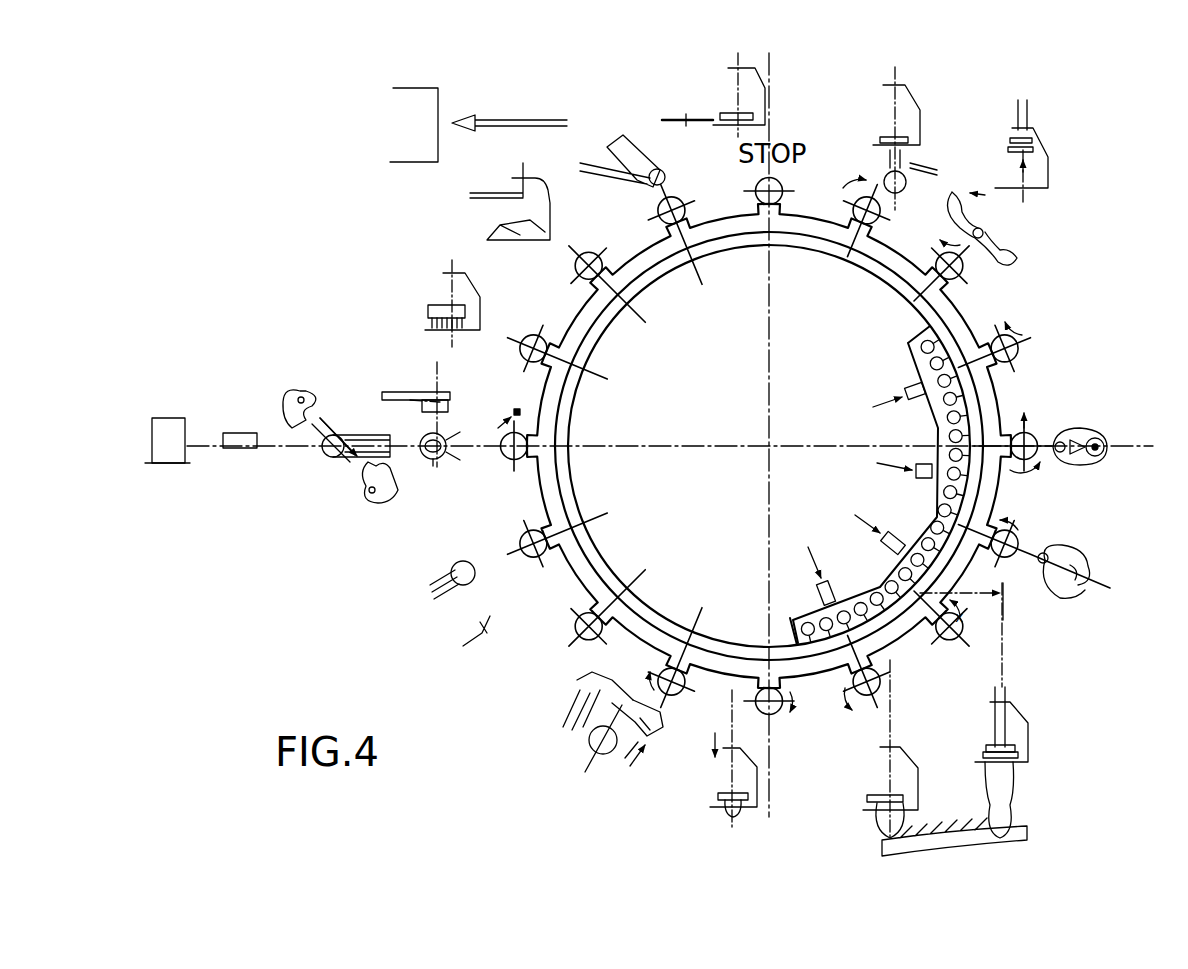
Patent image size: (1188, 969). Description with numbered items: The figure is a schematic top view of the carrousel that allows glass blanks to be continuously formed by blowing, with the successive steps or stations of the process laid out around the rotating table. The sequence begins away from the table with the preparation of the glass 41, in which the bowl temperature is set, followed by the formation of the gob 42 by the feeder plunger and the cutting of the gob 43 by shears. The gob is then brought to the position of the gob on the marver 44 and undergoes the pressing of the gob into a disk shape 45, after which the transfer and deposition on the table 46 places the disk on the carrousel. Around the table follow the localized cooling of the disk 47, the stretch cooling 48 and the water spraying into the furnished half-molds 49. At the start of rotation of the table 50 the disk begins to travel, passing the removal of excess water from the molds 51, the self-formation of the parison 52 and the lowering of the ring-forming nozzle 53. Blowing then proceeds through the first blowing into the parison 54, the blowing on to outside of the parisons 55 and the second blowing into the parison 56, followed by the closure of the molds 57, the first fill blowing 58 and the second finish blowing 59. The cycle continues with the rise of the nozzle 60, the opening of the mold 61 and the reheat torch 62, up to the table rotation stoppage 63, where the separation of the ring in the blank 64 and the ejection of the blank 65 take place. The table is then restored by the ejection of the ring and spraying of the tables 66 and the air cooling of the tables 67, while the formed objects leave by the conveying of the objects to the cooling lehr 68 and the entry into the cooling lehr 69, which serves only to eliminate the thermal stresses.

The preparation of the glass 41 is at (168, 415).
The formation of the gob 42 is at (238, 428).
The cutting of the gob 43 is at (330, 462).
The position of the gob on the marver 44 is at (447, 462).
The pressing of the gob into a disk shape 45 is at (417, 388).
The transfer and deposition on the table 46 is at (520, 412).
The localized cooling of the disk 47 is at (428, 590).
The stretch cooling 48 is at (482, 648).
The water spraying into the furnished half-molds 49 is at (560, 710).
The start of rotation of the table 50 is at (655, 663).
The removal of excess water from the molds 51 is at (655, 746).
The self-formation of the parison 52 is at (737, 685).
The lowering of the ring-forming nozzle 53 is at (753, 742).
The 1st blowing into the parison 54 is at (816, 578).
The blowing on to outside of the parisons 55 is at (1017, 790).
The 2nd blowing into the parison 56 is at (883, 525).
The closure of the molds 57 is at (1095, 557).
The 1st fill blowing 58 is at (906, 462).
The 2nd finish blowing 59 is at (903, 383).
The rise of the nozzle 60 is at (1043, 133).
The opening of the mold 61 is at (992, 234).
The reheat torch 62 is at (934, 160).
The table rotation stoppage 63 is at (784, 137).
The separation of the ring in the blank 64 is at (715, 112).
The ejection of the blank 65 is at (640, 145).
The ejection of the ring, spraying of the tables 66 is at (490, 210).
The air cooling of the tables 67 is at (432, 302).
The conveying of the objects to the cooling lehr 68 is at (525, 120).
The entry into the cooling lehr 69 is at (440, 108).